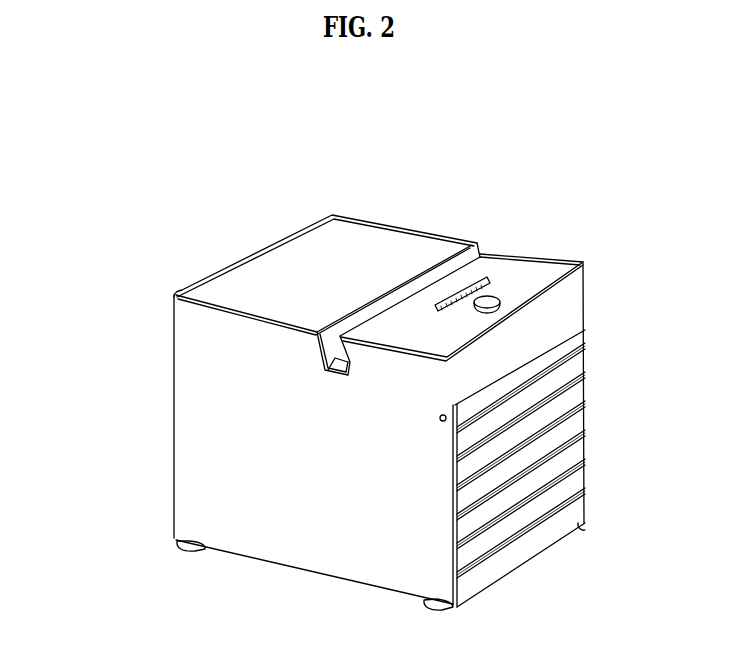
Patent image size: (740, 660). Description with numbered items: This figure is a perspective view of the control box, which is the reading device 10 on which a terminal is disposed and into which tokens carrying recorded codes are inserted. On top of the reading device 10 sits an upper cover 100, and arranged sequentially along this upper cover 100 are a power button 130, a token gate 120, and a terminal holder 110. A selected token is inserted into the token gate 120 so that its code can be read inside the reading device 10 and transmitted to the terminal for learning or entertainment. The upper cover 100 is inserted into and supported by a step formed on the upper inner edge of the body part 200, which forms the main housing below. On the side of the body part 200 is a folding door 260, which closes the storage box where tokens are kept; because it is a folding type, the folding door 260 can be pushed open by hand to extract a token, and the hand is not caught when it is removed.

The reading device 10 is at (434, 172).
The upper cover 100 is at (313, 268).
The terminal holder 110 is at (327, 355).
The token gate 120 is at (480, 278).
The power button 130 is at (497, 294).
The body part 200 is at (287, 485).
The folding door 260 is at (577, 417).